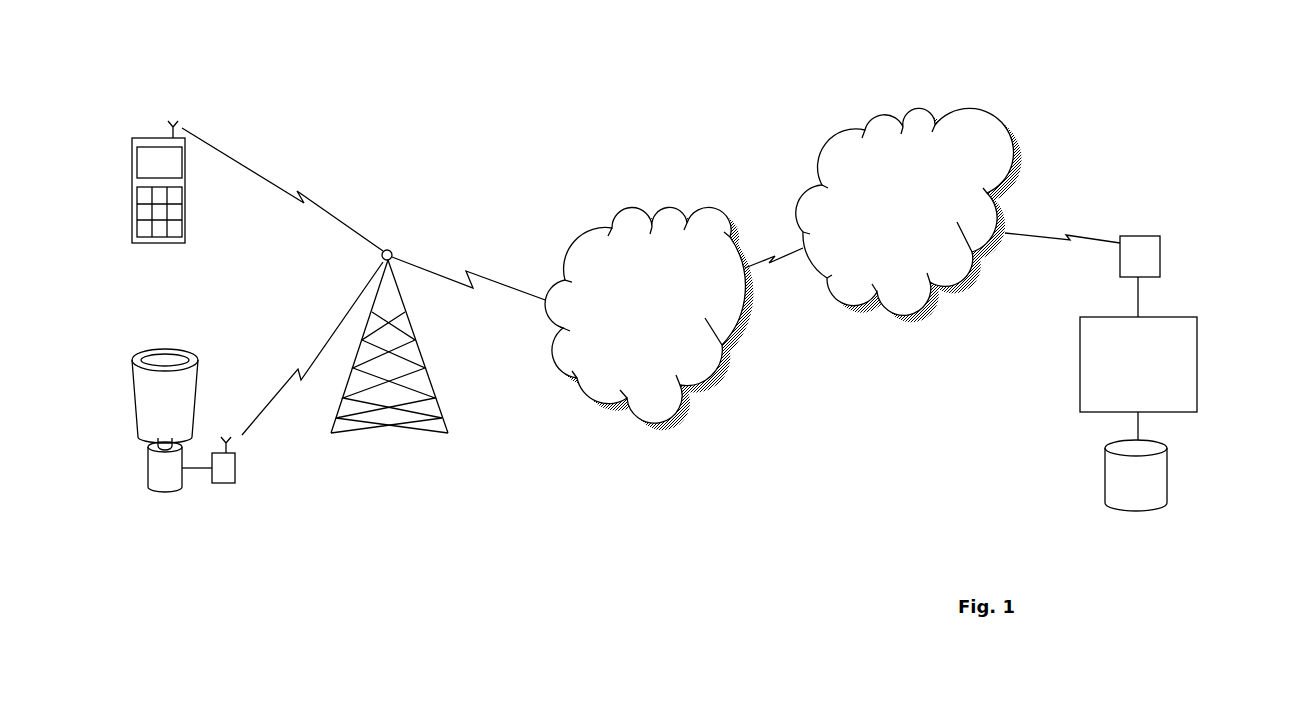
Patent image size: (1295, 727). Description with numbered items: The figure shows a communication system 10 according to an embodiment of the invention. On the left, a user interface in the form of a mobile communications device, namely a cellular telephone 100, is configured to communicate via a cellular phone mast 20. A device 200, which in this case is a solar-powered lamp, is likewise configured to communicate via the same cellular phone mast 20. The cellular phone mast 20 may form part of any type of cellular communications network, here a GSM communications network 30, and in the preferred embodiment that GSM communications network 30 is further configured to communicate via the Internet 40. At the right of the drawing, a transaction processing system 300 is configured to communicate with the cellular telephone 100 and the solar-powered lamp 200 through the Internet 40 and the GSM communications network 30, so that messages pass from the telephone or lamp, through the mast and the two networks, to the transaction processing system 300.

The communication system 10 is at (500, 63).
The cellular telephone 100 is at (186, 222).
The device (solar-powered lamp) 200 is at (192, 352).
The cellular phone mast 20 is at (338, 435).
The GSM communications network 30 is at (722, 385).
The Internet 40 is at (935, 313).
The transaction processing system 300 is at (1190, 260).